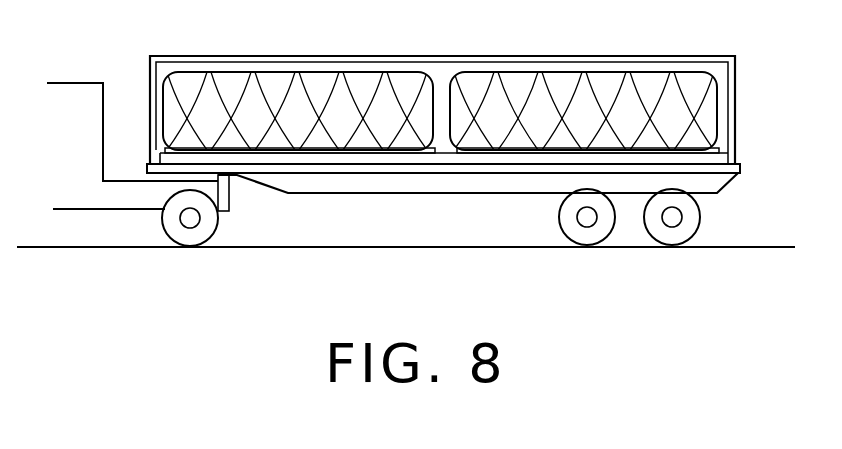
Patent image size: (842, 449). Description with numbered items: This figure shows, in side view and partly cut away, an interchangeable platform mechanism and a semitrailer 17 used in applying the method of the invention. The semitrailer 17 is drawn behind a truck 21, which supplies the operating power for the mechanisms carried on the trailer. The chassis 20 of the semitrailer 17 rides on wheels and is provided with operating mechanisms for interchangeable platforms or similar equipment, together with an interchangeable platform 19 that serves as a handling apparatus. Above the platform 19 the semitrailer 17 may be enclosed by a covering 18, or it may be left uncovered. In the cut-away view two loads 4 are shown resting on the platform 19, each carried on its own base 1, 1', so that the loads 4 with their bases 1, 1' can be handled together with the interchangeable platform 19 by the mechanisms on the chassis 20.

The pallet 1 is at (300, 187).
The pallet 1' is at (588, 188).
The bale 4 is at (297, 79).
The semitrailer 17 is at (660, 57).
The covering 18 is at (412, 56).
The interchangeable platform 19 is at (717, 166).
The chassis 20 is at (445, 182).
The truck 21 is at (70, 95).